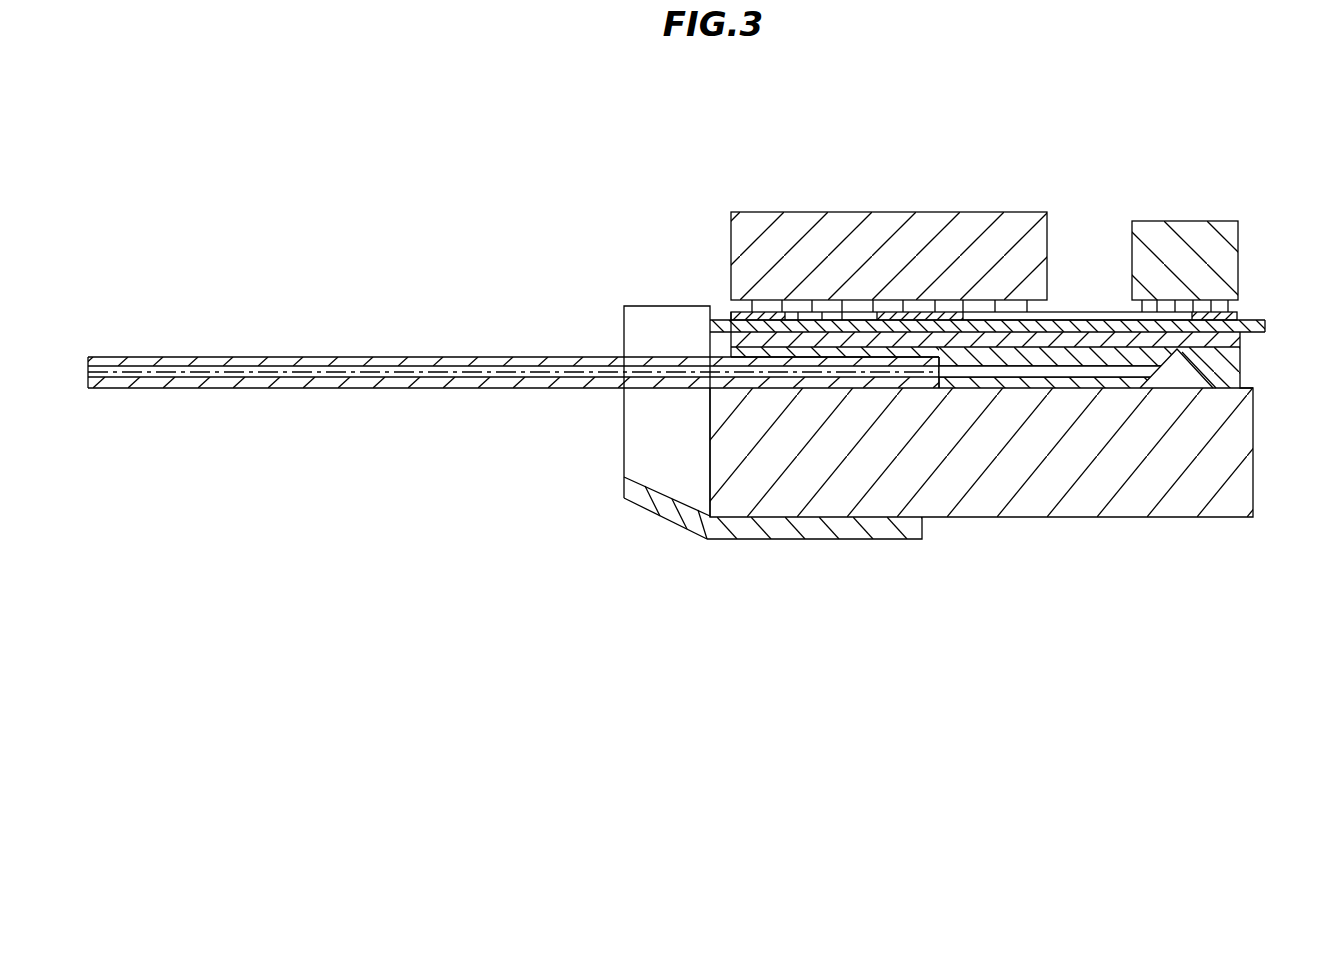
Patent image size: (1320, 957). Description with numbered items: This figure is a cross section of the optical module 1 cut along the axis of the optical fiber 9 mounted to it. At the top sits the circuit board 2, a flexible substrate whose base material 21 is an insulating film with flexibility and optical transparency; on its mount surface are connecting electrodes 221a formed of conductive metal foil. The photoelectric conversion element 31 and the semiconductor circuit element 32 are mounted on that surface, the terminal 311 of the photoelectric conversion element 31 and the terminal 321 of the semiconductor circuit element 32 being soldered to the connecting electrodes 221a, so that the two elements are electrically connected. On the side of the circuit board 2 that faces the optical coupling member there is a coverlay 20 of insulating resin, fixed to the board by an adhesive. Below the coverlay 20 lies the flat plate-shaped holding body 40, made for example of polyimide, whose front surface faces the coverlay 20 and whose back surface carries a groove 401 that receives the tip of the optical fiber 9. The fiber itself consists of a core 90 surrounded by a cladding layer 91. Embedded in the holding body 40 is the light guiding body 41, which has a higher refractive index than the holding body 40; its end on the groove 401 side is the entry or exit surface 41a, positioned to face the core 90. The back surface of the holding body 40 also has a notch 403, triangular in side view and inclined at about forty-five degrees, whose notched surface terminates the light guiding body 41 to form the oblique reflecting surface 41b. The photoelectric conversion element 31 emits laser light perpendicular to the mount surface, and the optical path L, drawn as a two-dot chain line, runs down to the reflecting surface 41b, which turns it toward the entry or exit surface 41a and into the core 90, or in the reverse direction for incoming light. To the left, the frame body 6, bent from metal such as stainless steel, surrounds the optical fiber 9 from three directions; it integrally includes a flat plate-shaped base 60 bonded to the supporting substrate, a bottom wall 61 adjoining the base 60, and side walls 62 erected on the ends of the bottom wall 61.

The optical module 1 is at (700, 348).
The circuit board 2 is at (990, 242).
The coverlay 20 is at (1113, 328).
The base material 21 is at (1247, 325).
The connecting electrode 221a is at (893, 318).
The semiconductor circuit element 32 is at (889, 232).
The terminal of the semiconductor circuit element 321 is at (825, 303).
The photoelectric conversion element 31 is at (1187, 237).
The terminal of the photoelectric conversion element 311 is at (1162, 305).
The frame body 6 is at (743, 424).
The base 60 is at (793, 530).
The bottom wall 61 is at (660, 502).
The side wall 62 is at (640, 447).
The optical fiber 9 is at (626, 366).
The core 90 is at (218, 378).
The cladding layer 91 is at (288, 387).
The optical path L is at (363, 375).
The holding body 40 is at (994, 452).
The light guiding body 41 is at (1056, 469).
The entry or exit surface 41a is at (940, 380).
The reflecting surface 41b is at (1155, 345).
The groove 401 is at (813, 390).
The notch 403 is at (1177, 368).